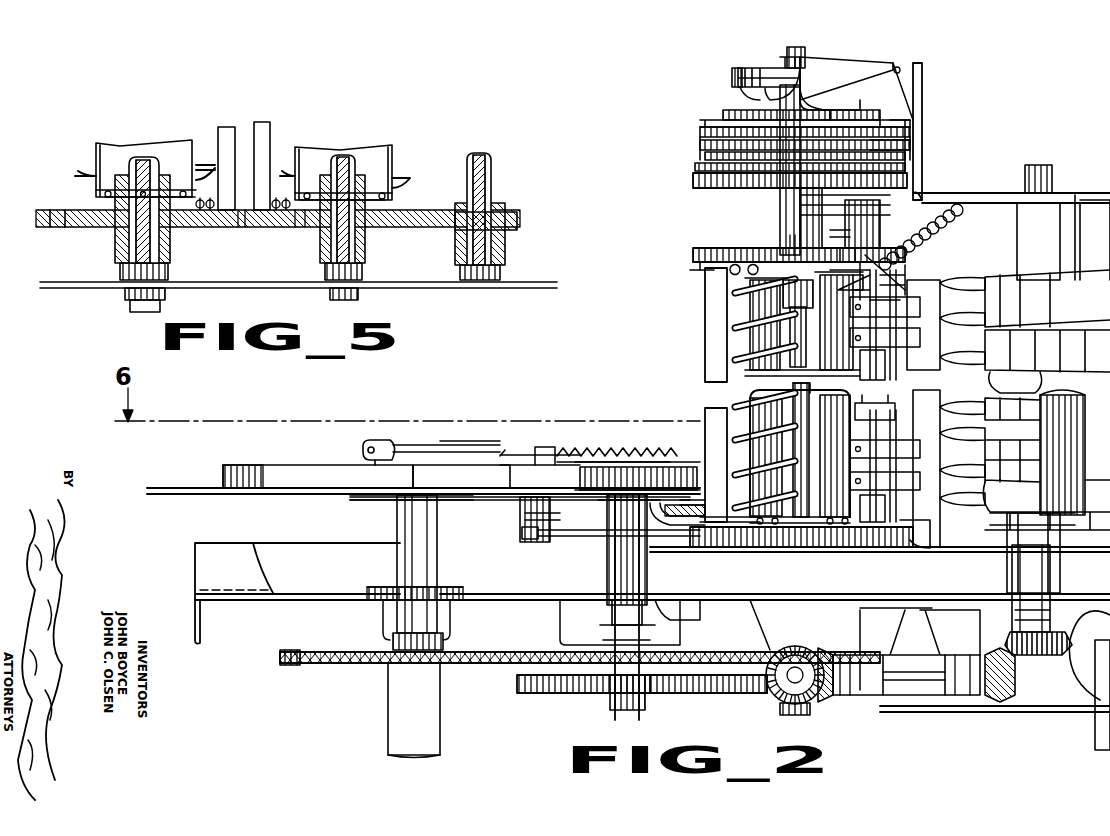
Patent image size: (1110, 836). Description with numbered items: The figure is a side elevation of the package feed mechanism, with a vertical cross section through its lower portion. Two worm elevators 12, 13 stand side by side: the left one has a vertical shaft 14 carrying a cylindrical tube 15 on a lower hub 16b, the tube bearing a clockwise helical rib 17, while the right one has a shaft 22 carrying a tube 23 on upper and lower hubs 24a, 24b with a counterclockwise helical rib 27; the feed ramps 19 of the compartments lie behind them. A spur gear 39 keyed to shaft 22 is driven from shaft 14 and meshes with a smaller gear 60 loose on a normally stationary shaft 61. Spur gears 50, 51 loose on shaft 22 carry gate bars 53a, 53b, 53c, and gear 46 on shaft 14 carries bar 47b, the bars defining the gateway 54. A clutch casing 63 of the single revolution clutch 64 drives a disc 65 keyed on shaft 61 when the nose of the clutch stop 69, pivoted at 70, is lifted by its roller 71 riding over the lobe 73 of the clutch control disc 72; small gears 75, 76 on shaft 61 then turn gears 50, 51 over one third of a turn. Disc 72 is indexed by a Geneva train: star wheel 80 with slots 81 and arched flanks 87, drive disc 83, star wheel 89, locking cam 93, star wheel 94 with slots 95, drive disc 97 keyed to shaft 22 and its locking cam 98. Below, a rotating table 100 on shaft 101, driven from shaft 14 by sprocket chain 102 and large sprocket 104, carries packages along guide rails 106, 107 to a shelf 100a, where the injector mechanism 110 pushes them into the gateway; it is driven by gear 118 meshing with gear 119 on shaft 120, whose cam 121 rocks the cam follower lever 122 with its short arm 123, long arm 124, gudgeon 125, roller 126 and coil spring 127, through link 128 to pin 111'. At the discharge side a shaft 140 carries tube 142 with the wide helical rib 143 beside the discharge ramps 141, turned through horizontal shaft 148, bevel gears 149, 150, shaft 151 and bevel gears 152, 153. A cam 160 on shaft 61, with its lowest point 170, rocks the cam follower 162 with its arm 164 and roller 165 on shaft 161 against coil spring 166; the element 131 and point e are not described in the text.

In FIG. 5, the worm elevator 12 is at (105, 150).
In FIG. 5, the worm elevator 13 is at (360, 147).
In FIG. 2, the worm elevator 13 is at (785, 368).
In FIG. 5, the vertical shaft 14 is at (148, 165).
In FIG. 2, the vertical shaft 14 is at (815, 712).
In FIG. 5, the cylindrical tube 15 is at (92, 188).
In FIG. 5, the lower hub 16b is at (160, 170).
In FIG. 5, the helical rib 17 is at (85, 173).
In FIG. 2, the feed ramps 19 is at (885, 449).
In FIG. 5, the vertical shaft 22 is at (340, 152).
In FIG. 2, the vertical shaft 22 is at (800, 392).
In FIG. 5, the cylindrical tube 23 is at (380, 152).
In FIG. 2, the cylindrical tube 23 is at (730, 307).
In FIG. 2, the upper hub 24a is at (758, 250).
In FIG. 5, the lower hub 24b is at (385, 178).
In FIG. 2, the lower hub 24b is at (773, 526).
In FIG. 5, the helical rib 27 is at (421, 187).
In FIG. 2, the helical rib 27 is at (735, 352).
In FIG. 2, the spur gear 39 is at (690, 181).
In FIG. 5, the spur gear 46 is at (85, 225).
In FIG. 5, the vertical bar 47b is at (227, 127).
In FIG. 2, the spur gear 50 is at (692, 256).
In FIG. 5, the spur gear 51 is at (300, 225).
In FIG. 2, the spur gear 51 is at (718, 531).
In FIG. 2, the vertical bar 53a is at (873, 392).
In FIG. 5, the vertical bar 53b is at (262, 125).
In FIG. 2, the vertical bar 53c is at (705, 412).
In FIG. 5, the gateway 54 is at (240, 212).
In FIG. 2, the gear 60 is at (780, 186).
In FIG. 5, the vertical shaft 61 is at (490, 160).
In FIG. 2, the vertical shaft 61 is at (805, 45).
In FIG. 2, the clutch casing 63 is at (730, 81).
In FIG. 2, the single revolution clutch 64 is at (760, 62).
In FIG. 2, the disc 65 is at (775, 60).
In FIG. 2, the clutch stop 69 is at (858, 60).
In FIG. 2, the pivot 70 is at (900, 70).
In FIG. 2, the roller 71 is at (760, 99).
In FIG. 2, the clutch control disc 72 is at (880, 116).
In FIG. 2, the lobe 73 is at (835, 110).
In FIG. 2, the spur gear 75 is at (830, 251).
In FIG. 5, the spur gear 76 is at (518, 218).
In FIG. 2, the spur gear 76 is at (803, 548).
In FIG. 2, the star wheel 80 is at (870, 127).
In FIG. 2, the radial slots 81 is at (760, 113).
In FIG. 2, the drive disc 83 is at (705, 125).
In FIG. 2, the arched flanks 87 is at (698, 132).
In FIG. 2, the star wheel 89 is at (700, 141).
In FIG. 2, the locking cam 93 is at (870, 145).
In FIG. 2, the star wheel 94 is at (703, 157).
In FIG. 2, the radial slots 95 is at (795, 200).
In FIG. 2, the drive disc 97 is at (693, 167).
In FIG. 2, the locking cam 98 is at (698, 147).
In FIG. 2, the rotating circular table 100 is at (185, 487).
In FIG. 2, the shelf 100a is at (710, 495).
In FIG. 2, the vertical shaft 101 is at (395, 687).
In FIG. 2, the sprocket chain 102 is at (282, 663).
In FIG. 2, the sprocket 104 is at (452, 652).
In FIG. 2, the guide rail 106 is at (462, 470).
In FIG. 2, the guide rail 107 is at (300, 472).
In FIG. 2, the package injector mechanism 110 is at (507, 446).
In FIG. 2, the pin 111' is at (360, 430).
In FIG. 2, the gear 118 is at (748, 692).
In FIG. 2, the gear 119 is at (558, 692).
In FIG. 2, the vertical shaft 120 is at (605, 500).
In FIG. 2, the cam 121 is at (585, 535).
In FIG. 2, the cam follower lever 122 is at (520, 517).
In FIG. 2, the short lower arm 123 is at (530, 510).
In FIG. 2, the long upper arm 124 is at (540, 448).
In FIG. 2, the gudgeon 125 is at (638, 453).
In FIG. 2, the roller 126 is at (520, 533).
In FIG. 2, the coil spring 127 is at (654, 450).
In FIG. 2, the link 128 is at (440, 441).
In FIG. 2, the bracket 131 is at (677, 515).
In FIG. 2, the vertical shaft 140 is at (1018, 242).
In FIG. 2, the discharge ramps 141 is at (995, 328).
In FIG. 2, the cylindrical tube 142 is at (1030, 352).
In FIG. 2, the helical rib 143 is at (885, 325).
In FIG. 2, the horizontal shaft 148 is at (785, 705).
In FIG. 2, the bevel gear 149 is at (793, 647).
In FIG. 2, the bevel gear 150 is at (825, 702).
In FIG. 2, the horizontal shaft 151 is at (908, 670).
In FIG. 2, the bevel gear 152 is at (995, 700).
In FIG. 2, the bevel gear 153 is at (1045, 655).
In FIG. 2, the cam 160 is at (798, 294).
In FIG. 2, the vertical shaft 161 is at (885, 425).
In FIG. 2, the cam follower 162 is at (912, 270).
In FIG. 2, the arm 164 is at (885, 290).
In FIG. 2, the roller 165 is at (866, 240).
In FIG. 2, the coil spring 166 is at (940, 215).
In FIG. 2, the lowest point 170 is at (797, 243).
In FIG. 2, the point e is at (875, 407).